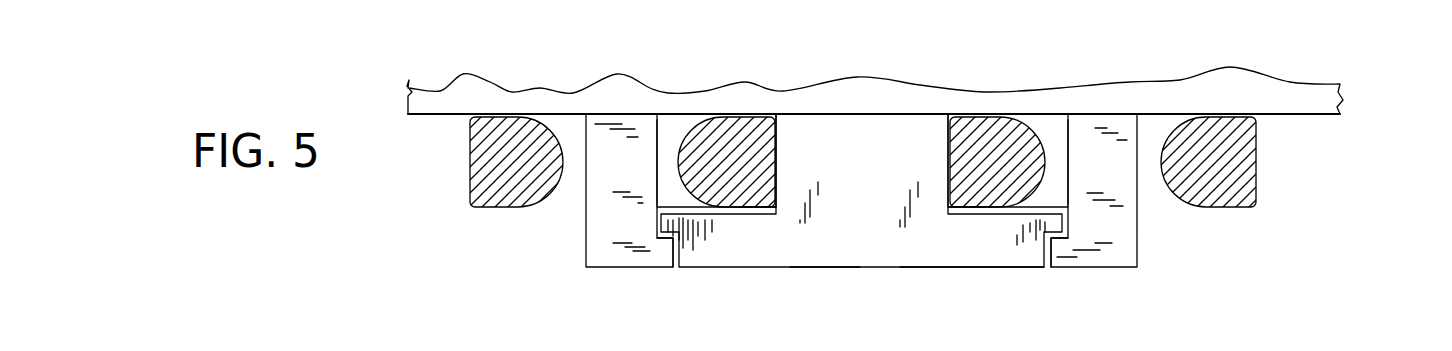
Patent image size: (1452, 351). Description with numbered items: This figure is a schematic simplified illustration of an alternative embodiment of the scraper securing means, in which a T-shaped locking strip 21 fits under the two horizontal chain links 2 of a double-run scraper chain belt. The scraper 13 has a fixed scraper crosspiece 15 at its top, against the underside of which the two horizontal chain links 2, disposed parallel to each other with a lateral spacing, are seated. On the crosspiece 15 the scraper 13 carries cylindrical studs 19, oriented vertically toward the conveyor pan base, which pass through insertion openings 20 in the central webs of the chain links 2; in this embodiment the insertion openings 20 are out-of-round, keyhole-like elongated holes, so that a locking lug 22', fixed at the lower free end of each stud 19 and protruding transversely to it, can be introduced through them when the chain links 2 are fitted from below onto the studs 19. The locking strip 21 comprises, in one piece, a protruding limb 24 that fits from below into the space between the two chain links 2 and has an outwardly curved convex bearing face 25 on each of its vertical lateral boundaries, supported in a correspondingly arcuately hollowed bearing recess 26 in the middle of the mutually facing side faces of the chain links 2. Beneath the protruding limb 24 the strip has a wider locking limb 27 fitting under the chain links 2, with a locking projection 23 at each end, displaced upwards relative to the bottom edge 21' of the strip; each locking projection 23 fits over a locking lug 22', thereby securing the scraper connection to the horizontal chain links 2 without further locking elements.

The horizontal chain link 2 is at (741, 130).
The scraper 13 is at (1364, 112).
The scraper crosspiece 15 is at (875, 104).
The stud 19 is at (593, 242).
The insertion opening 20 is at (673, 128).
The locking strip 21 is at (862, 219).
The bottom edge of the locking strip 21' is at (972, 285).
The locking lug 22' is at (854, 276).
The locking projection 23 is at (678, 227).
The protruding limb 24 is at (870, 178).
The convex bearing face 25 is at (777, 181).
The bearing recess 26 is at (772, 178).
The locking limb 27 is at (822, 262).